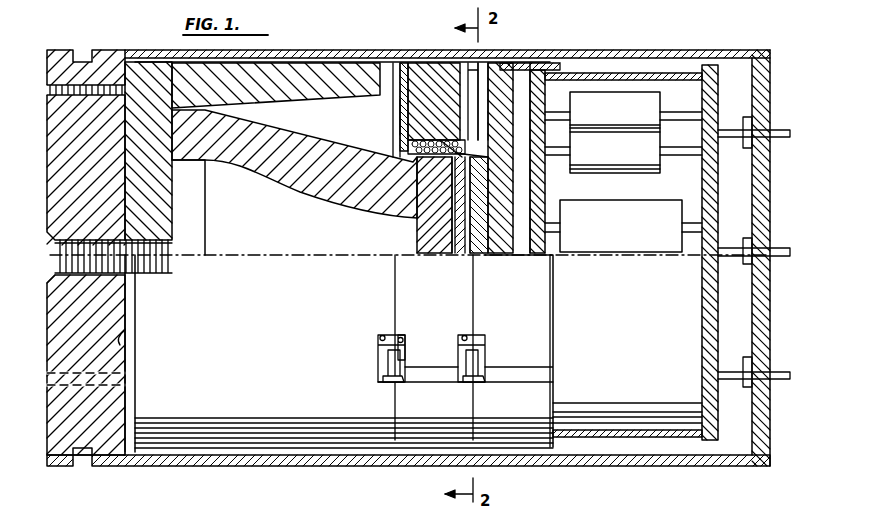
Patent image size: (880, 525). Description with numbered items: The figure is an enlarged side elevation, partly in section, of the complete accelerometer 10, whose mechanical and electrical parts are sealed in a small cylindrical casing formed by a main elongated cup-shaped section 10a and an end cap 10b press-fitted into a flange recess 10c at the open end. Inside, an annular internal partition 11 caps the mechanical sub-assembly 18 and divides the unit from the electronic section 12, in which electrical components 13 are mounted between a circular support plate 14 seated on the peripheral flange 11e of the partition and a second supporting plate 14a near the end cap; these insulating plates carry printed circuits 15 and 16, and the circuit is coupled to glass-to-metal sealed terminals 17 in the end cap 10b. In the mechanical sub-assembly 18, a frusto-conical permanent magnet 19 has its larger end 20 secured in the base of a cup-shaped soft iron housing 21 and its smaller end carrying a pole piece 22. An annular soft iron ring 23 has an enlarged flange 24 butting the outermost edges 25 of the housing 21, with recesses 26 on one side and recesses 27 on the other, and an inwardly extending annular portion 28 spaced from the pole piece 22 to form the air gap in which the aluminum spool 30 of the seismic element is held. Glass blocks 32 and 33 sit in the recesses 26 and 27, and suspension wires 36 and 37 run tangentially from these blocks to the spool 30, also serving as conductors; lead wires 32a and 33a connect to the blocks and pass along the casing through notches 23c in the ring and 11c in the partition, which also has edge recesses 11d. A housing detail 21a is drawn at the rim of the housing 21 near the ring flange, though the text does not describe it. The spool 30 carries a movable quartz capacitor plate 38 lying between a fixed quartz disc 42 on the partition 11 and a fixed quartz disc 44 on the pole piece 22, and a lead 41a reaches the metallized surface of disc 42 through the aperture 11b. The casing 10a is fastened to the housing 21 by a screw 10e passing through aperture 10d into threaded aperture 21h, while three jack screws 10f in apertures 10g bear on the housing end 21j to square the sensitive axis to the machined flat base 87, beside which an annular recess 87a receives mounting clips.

The accelerometer 10 is at (357, 478).
The main elongated cup-shaped casing section 10a is at (138, 50).
The end cap 10b is at (762, 90).
The flange recess 10c is at (770, 50).
The aperture 10d is at (86, 238).
The screw 10e is at (103, 262).
The jack screws 10f is at (103, 95).
The apertures 10g is at (72, 95).
The annular internal partition 11 is at (505, 192).
The aperture 11b is at (570, 147).
The axially extending notch 11c is at (525, 385).
The edge recesses 11d is at (538, 110).
The peripheral flange 11e is at (560, 65).
The electronic circuit section 12 is at (652, 68).
The electrical components 13 is at (640, 118).
The circular support plate 14 is at (548, 245).
The supporting plate 14a is at (718, 195).
The printed circuit 15 is at (555, 105).
The printed circuit 16 is at (700, 178).
The glass-to-metal sealed terminals 17 is at (790, 145).
The mechanical accelerometer sub-assembly 18 is at (298, 62).
The permanent magnet 19 is at (287, 226).
The larger end of magnet 20 is at (205, 208).
The soft iron housing 21 is at (280, 108).
The cylinder bracket 21a is at (378, 63).
The threaded aperture 21h is at (172, 248).
The end of magnet housing 21j is at (128, 338).
The pole piece 22 is at (430, 235).
The annular soft iron ring 23 is at (425, 433).
The axially extending notch 23c is at (450, 383).
The enlarged annular flange 24 is at (425, 72).
The outermost edges of housing 25 is at (396, 70).
The recesses 26 is at (473, 68).
The recesses 27 is at (408, 68).
The inwardly extending annular portion 28 is at (418, 127).
The spool 30 is at (408, 147).
The glass blocks 32 is at (500, 68).
The wire leads 32a is at (466, 384).
The glass blocks 33 is at (400, 84).
The wires 33a is at (388, 380).
The suspension wires 36 is at (470, 112).
The suspension wires 37 is at (410, 112).
The movable capacitor plate 38 is at (470, 255).
The lead 41a is at (570, 113).
The fused quartz disc 42 is at (498, 255).
The quartz disc 44 is at (460, 255).
The flat base 87 is at (47, 455).
The annular recess 87a is at (85, 470).